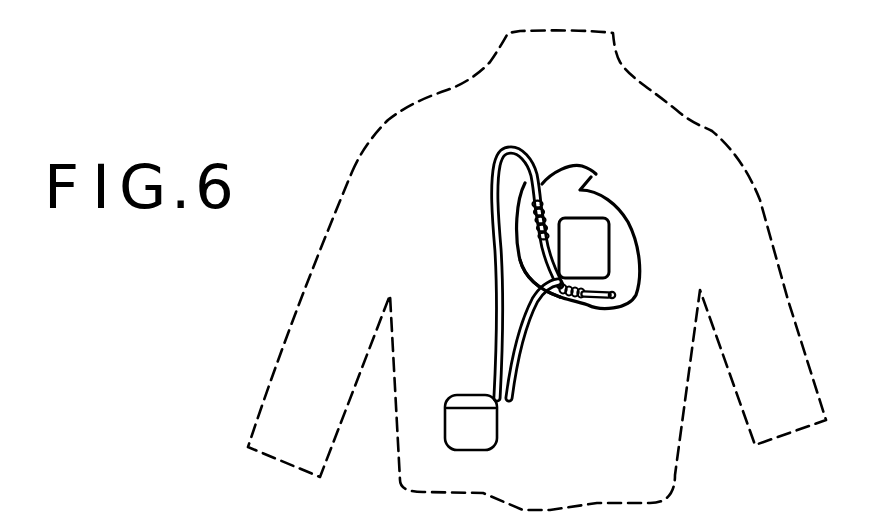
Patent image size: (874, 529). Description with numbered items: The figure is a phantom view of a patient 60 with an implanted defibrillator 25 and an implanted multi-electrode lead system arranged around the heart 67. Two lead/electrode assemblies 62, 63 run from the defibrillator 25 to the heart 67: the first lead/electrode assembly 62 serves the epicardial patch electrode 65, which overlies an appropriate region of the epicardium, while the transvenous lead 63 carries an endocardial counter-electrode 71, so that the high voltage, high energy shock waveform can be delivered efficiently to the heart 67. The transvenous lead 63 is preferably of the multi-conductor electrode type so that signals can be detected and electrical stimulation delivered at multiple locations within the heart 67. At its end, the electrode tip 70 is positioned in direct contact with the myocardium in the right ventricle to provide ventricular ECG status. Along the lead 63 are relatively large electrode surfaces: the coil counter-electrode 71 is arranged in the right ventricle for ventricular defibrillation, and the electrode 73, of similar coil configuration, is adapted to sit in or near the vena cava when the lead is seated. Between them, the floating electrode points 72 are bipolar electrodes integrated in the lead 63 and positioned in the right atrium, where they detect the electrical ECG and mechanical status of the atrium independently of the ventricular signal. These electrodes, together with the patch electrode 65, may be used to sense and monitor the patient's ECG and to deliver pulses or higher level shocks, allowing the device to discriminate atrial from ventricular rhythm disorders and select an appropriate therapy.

The defibrillator 25 is at (480, 432).
The patient 60 is at (722, 135).
The lead/electrode assembly 62 is at (515, 375).
The transvenous lead 63 is at (498, 231).
The epicardial patch electrode 65 is at (597, 258).
The heart 67 is at (621, 210).
The electrode tip 70 is at (612, 300).
The coil counter-electrode 71 is at (569, 299).
The floating electrode points 72 is at (532, 221).
The electrode 73 is at (547, 192).